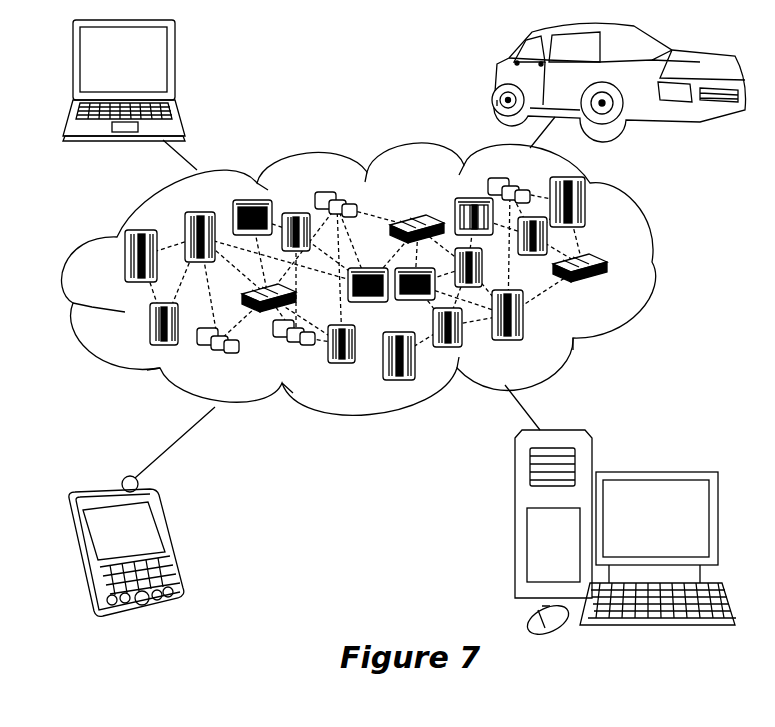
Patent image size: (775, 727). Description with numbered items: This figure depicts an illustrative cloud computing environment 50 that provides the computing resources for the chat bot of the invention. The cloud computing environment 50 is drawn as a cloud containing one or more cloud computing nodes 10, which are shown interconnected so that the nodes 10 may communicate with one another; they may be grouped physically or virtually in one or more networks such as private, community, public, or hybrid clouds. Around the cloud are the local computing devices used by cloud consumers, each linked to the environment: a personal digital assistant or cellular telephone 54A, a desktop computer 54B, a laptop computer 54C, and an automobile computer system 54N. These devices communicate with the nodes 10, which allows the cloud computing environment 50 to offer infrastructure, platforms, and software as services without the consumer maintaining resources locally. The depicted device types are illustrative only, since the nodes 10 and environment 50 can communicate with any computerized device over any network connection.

The cloud computing nodes 10 is at (612, 286).
The cloud computing environment 50 is at (656, 264).
The personal digital assistant (PDA) or cellular telephone 54A is at (173, 540).
The desktop computer 54B is at (660, 472).
The laptop computer 54C is at (177, 62).
The automobile computer system 54N is at (498, 74).